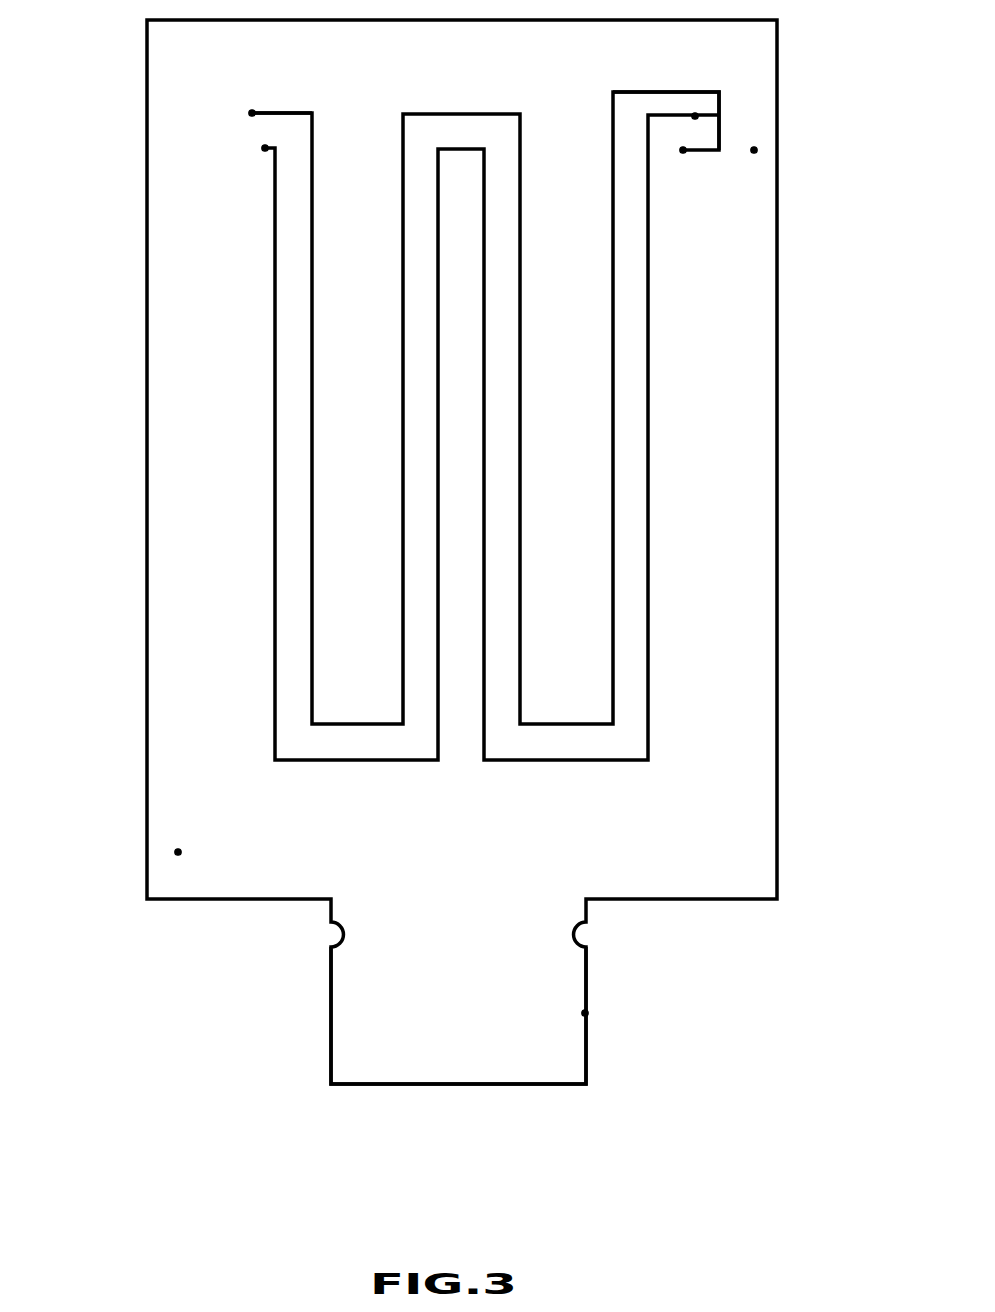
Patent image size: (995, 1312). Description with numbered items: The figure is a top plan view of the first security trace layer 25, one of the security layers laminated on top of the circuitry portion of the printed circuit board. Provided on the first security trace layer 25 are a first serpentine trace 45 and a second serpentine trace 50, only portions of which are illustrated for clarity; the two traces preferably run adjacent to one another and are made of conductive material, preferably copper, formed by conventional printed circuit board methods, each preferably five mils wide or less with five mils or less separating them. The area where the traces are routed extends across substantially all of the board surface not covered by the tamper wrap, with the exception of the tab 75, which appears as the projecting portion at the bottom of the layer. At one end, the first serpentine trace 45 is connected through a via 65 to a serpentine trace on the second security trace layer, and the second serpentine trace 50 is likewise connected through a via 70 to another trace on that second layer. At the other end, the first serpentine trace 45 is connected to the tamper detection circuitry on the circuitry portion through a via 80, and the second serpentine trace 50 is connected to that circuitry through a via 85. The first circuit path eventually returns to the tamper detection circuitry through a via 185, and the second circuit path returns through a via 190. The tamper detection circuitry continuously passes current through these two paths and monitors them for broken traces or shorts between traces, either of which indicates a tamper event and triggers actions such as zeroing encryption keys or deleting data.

The first security trace layer 25 is at (778, 399).
The second serpentine trace 50 is at (274, 400).
The first serpentine trace 45 is at (272, 113).
The via 65 is at (252, 113).
The via 70 is at (265, 148).
The via 80 is at (683, 150).
The via 85 is at (695, 116).
The via 190 is at (754, 150).
The via 185 is at (178, 852).
The tab 75 is at (585, 1013).